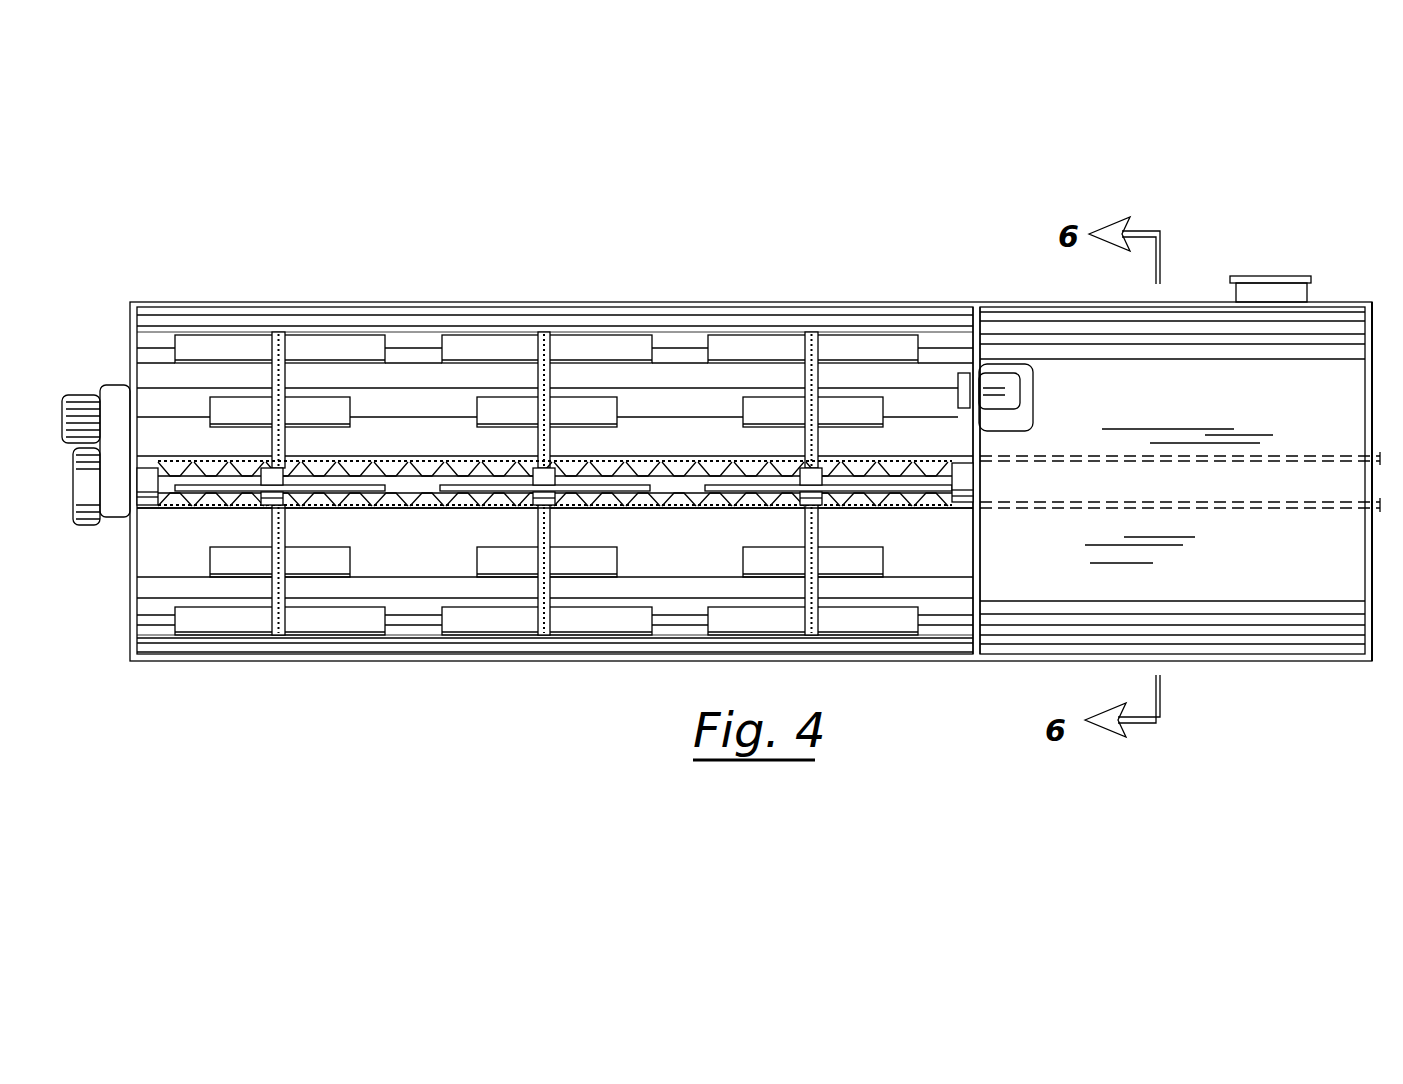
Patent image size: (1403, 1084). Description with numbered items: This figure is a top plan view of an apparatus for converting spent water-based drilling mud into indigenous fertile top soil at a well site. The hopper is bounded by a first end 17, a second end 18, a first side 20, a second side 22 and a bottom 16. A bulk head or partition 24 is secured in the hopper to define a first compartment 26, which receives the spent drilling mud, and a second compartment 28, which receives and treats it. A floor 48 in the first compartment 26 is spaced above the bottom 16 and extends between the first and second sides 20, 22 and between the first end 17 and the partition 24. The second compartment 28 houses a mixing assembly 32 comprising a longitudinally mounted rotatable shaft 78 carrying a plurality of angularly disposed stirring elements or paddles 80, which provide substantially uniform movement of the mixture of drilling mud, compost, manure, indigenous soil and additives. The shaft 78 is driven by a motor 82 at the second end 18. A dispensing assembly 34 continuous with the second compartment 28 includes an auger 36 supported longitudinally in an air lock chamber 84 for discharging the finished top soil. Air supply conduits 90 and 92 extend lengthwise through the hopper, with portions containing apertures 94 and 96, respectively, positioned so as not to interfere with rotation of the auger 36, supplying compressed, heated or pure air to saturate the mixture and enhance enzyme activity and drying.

The bottom 16 is at (706, 562).
The first end 17 is at (1372, 360).
The second end 18 is at (130, 568).
The first side 20 is at (598, 660).
The second side 22 is at (838, 302).
The bulk head or partition 24 is at (982, 439).
The first compartment 26 is at (1297, 372).
The second compartment 28 is at (412, 332).
The mixing assembly 32 is at (592, 330).
The dispensing assembly 34 is at (418, 507).
The auger 36 is at (427, 470).
The floor 48 is at (1274, 590).
The shaft 78 is at (358, 480).
The stirring elements or paddles 80 is at (625, 335).
The motor 82 is at (83, 395).
The air lock chamber 84 is at (922, 503).
The air supply conduit 90 is at (613, 510).
The air supply conduit 92 is at (667, 455).
The apertures 94 is at (487, 508).
The apertures 96 is at (910, 460).